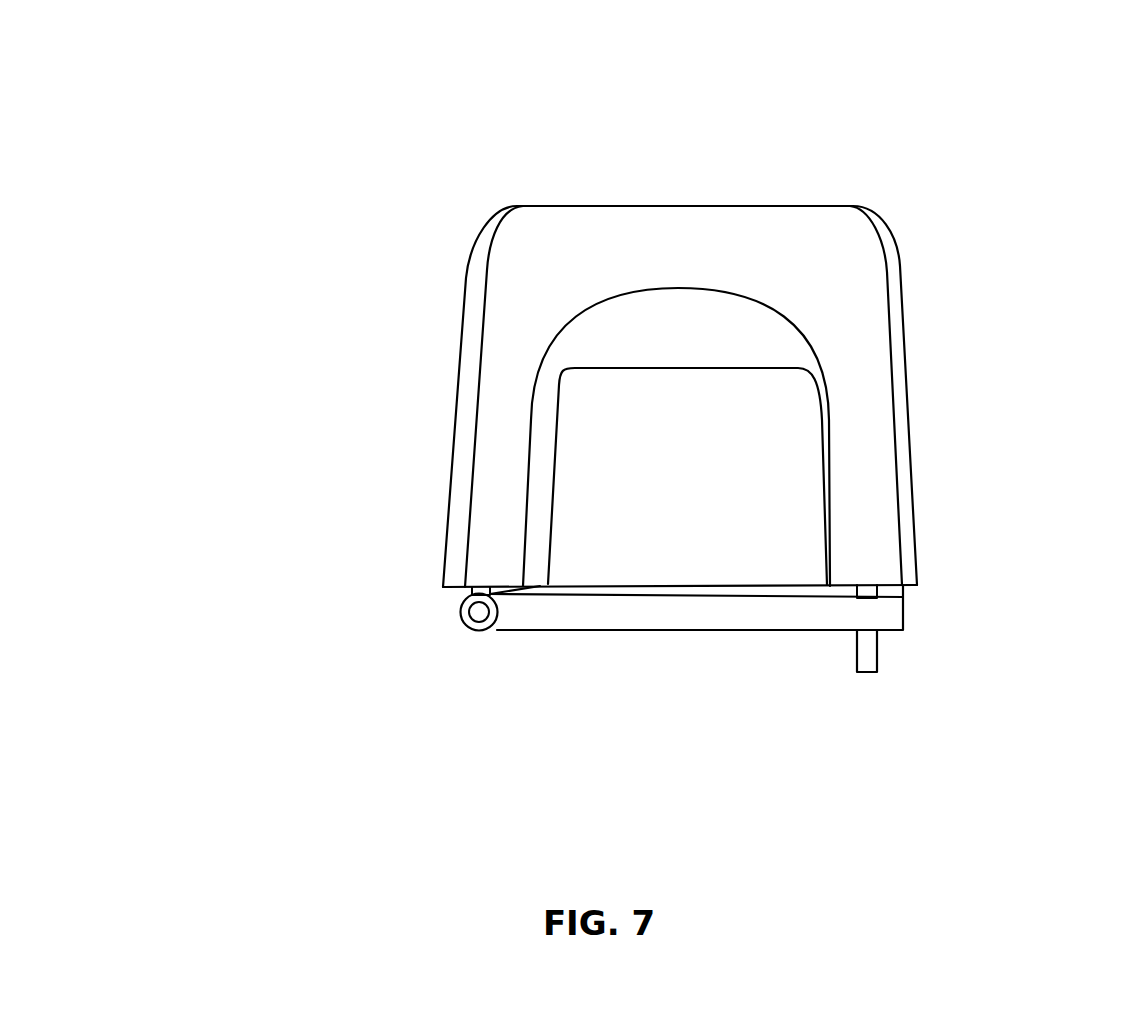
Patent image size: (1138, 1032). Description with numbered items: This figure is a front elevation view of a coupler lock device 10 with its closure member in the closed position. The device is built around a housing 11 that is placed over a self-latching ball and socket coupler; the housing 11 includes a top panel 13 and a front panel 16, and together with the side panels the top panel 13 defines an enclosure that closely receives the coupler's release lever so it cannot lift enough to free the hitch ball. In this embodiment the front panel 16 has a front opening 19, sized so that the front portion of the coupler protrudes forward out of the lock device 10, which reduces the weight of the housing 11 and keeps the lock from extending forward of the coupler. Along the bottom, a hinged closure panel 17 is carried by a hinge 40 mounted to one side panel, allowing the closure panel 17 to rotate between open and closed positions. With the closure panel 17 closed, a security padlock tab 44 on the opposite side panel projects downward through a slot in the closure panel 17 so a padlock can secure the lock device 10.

The coupler lock device 10 is at (827, 202).
The housing 11 is at (892, 297).
The top panel 13 is at (648, 220).
The front panel 16 is at (507, 308).
The closure panel 17 is at (632, 613).
The front opening 19 is at (613, 422).
The hinge 40 is at (477, 613).
The security padlock tab 44 is at (867, 648).